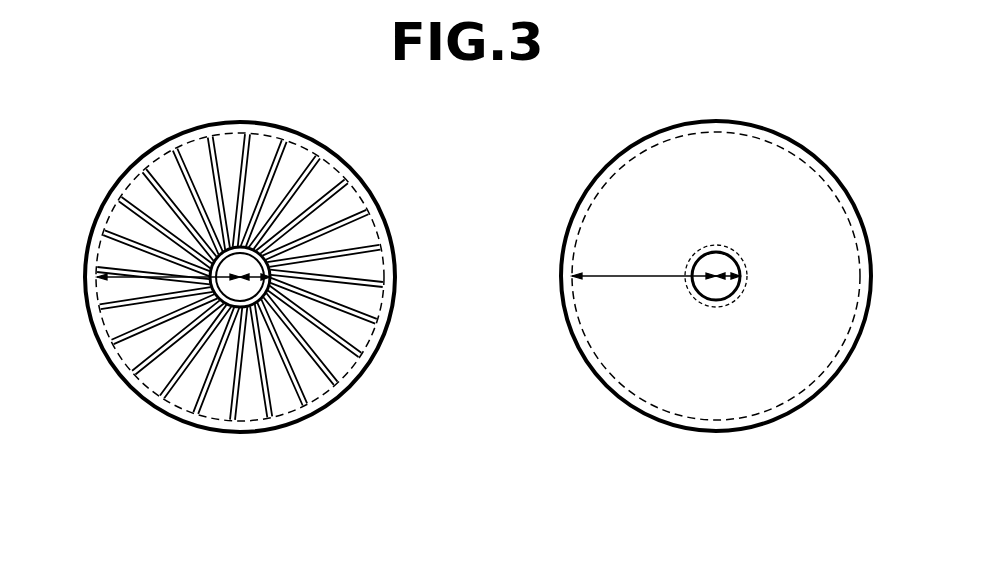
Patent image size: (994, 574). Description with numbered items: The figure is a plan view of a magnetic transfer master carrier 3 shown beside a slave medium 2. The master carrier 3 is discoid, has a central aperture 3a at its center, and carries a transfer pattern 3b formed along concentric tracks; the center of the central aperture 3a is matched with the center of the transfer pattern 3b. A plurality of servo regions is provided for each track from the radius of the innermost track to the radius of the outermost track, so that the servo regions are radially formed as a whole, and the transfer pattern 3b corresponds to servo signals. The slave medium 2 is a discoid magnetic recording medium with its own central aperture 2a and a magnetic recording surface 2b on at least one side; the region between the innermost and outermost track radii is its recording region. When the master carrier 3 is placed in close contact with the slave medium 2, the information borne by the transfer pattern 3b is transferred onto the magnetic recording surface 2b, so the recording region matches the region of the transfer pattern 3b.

The slave medium 2 is at (719, 268).
The central aperture 2a is at (698, 260).
The magnetic recording surface 2b is at (758, 148).
The master carrier 3 is at (242, 291).
The central aperture 3a is at (158, 218).
The transfer pattern 3b is at (287, 138).